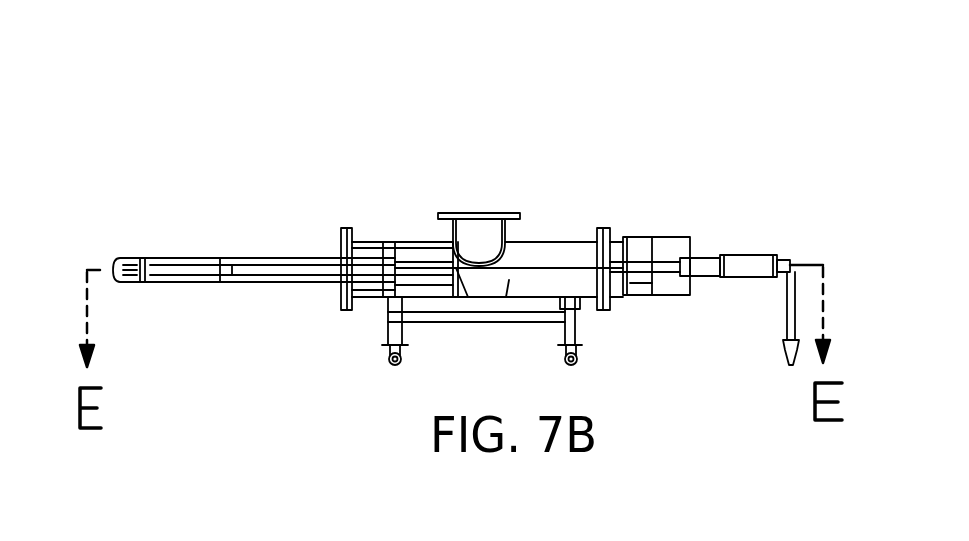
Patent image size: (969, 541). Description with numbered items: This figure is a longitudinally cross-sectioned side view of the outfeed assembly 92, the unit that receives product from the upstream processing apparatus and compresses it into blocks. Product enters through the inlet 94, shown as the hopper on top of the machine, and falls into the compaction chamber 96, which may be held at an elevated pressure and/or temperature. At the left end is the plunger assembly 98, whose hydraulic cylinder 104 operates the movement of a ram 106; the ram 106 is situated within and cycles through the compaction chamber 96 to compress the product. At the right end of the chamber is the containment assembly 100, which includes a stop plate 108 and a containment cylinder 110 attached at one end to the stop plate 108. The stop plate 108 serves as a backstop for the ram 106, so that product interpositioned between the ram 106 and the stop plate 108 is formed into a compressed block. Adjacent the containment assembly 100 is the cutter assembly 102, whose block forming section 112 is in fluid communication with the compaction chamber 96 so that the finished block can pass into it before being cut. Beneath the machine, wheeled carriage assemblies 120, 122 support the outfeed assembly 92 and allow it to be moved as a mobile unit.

The outfeed assembly 92 is at (400, 82).
The inlet 94 is at (481, 214).
The compaction chamber 96 is at (540, 242).
The plunger assembly 98 is at (326, 198).
The containment assembly 100 is at (726, 185).
The cutter assembly 102 is at (640, 190).
The hydraulic cylinder 104 is at (203, 258).
The ram 106 is at (431, 262).
The stop plate 108 is at (642, 284).
The containment cylinder 110 is at (773, 256).
The block forming section 112 is at (625, 233).
The wheeled carriage assembly 120 is at (557, 372).
The wheeled carriage assembly 122 is at (790, 366).